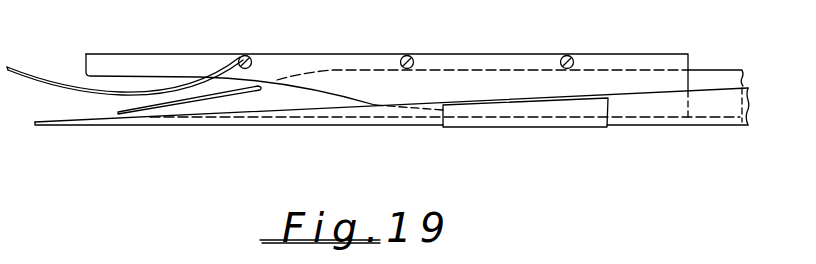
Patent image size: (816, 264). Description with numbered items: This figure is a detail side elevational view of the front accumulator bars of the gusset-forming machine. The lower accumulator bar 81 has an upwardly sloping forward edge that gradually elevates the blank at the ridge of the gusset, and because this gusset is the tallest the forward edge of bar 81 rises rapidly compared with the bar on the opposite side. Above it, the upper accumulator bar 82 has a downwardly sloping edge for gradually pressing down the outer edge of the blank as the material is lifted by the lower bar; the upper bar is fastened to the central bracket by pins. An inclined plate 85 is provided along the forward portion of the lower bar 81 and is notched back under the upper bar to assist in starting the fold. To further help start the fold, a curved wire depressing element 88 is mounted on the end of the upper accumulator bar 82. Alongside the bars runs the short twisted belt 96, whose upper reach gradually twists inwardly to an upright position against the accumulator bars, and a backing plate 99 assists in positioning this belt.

The lower accumulator bar 81 is at (270, 103).
The upper accumulator bar 82 is at (297, 63).
The inclined plate 85 is at (187, 103).
The curved wire depressing element 88 is at (68, 57).
The twisted belt 96 is at (700, 112).
The backing plate 99 is at (535, 118).